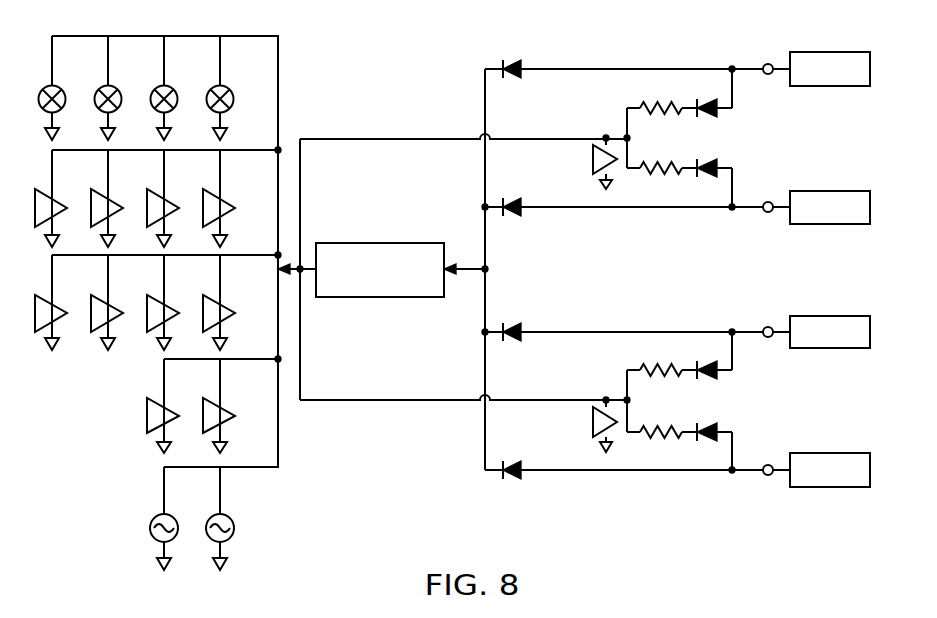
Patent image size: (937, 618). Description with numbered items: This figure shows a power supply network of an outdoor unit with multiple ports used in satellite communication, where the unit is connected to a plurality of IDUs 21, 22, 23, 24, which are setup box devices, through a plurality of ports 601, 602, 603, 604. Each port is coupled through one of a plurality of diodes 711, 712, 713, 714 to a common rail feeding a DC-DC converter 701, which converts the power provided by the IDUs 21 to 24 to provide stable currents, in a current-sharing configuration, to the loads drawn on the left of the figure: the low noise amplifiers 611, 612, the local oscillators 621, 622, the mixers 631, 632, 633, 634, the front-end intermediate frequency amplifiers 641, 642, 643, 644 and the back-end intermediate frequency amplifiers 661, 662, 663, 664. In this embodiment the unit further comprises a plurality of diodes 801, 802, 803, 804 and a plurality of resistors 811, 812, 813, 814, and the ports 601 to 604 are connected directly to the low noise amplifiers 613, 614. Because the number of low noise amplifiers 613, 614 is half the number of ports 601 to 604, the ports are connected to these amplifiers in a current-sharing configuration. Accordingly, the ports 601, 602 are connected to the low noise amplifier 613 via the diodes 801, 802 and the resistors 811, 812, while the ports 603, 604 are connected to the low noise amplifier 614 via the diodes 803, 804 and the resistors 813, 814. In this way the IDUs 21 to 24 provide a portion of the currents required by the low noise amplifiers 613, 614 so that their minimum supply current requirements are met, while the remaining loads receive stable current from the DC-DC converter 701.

The IDU 21 is at (870, 69).
The IDU 22 is at (870, 207).
The IDU 23 is at (870, 332).
The IDU 24 is at (870, 470).
The port 601 is at (768, 63).
The port 602 is at (768, 201).
The port 603 is at (768, 326).
The port 604 is at (768, 464).
The low noise amplifier 611 is at (172, 408).
The low noise amplifier 612 is at (228, 408).
The low noise amplifier 613 is at (593, 159).
The low noise amplifier 614 is at (593, 422).
The local oscillator 621 is at (175, 516).
The local oscillator 622 is at (231, 516).
The mixer 631 is at (63, 88).
The mixer 632 is at (119, 88).
The mixer 633 is at (175, 88).
The mixer 634 is at (231, 88).
The front-end intermediate frequency amplifier 641 is at (60, 303).
The front-end intermediate frequency amplifier 642 is at (116, 303).
The front-end intermediate frequency amplifier 643 is at (172, 303).
The front-end intermediate frequency amplifier 644 is at (228, 303).
The back-end intermediate frequency amplifier 661 is at (60, 200).
The back-end intermediate frequency amplifier 662 is at (116, 200).
The back-end intermediate frequency amplifier 663 is at (172, 200).
The back-end intermediate frequency amplifier 664 is at (228, 200).
The DC-DC converter 701 is at (380, 243).
The diode 711 is at (512, 60).
The diode 712 is at (512, 198).
The diode 713 is at (512, 323).
The diode 714 is at (512, 461).
The diode 801 is at (705, 95).
The diode 802 is at (705, 182).
The diode 803 is at (705, 357).
The diode 804 is at (705, 446).
The resistor 811 is at (661, 96).
The resistor 812 is at (661, 182).
The resistor 813 is at (661, 358).
The resistor 814 is at (661, 445).